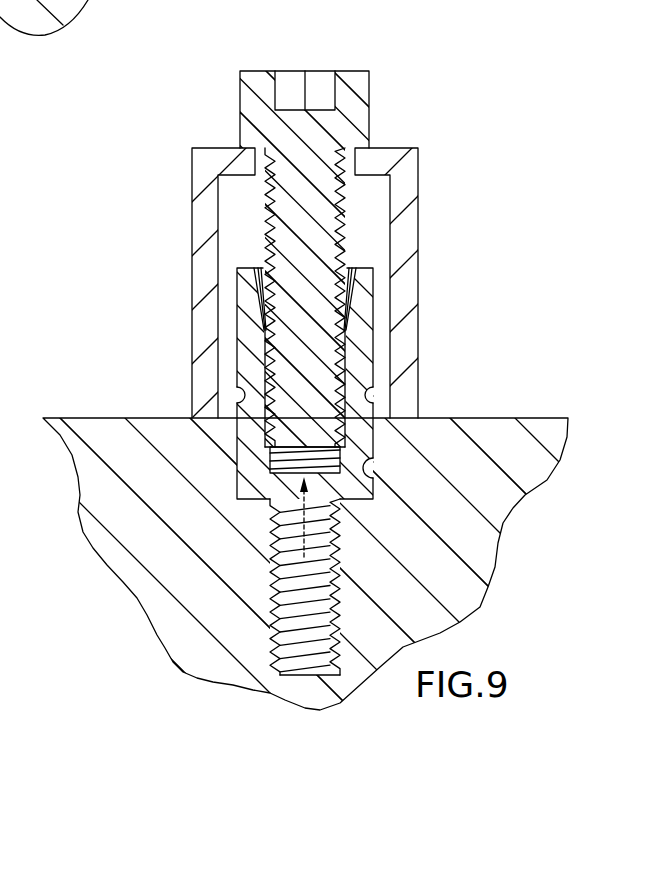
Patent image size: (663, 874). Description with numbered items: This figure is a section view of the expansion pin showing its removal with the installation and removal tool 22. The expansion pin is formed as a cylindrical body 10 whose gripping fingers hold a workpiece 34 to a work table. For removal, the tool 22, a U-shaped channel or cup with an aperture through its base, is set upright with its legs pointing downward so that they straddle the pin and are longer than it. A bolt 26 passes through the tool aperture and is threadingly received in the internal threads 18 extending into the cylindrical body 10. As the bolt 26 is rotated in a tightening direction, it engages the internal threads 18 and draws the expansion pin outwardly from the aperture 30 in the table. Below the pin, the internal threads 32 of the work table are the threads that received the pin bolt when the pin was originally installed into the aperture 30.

The cylindrical body 10 is at (242, 327).
The internal threads 18 is at (268, 454).
The installation and removal tool 22 is at (198, 165).
The bolt 26 is at (255, 76).
The aperture 30 is at (380, 460).
The internal threads 32 is at (330, 601).
The workpiece 34 is at (488, 430).